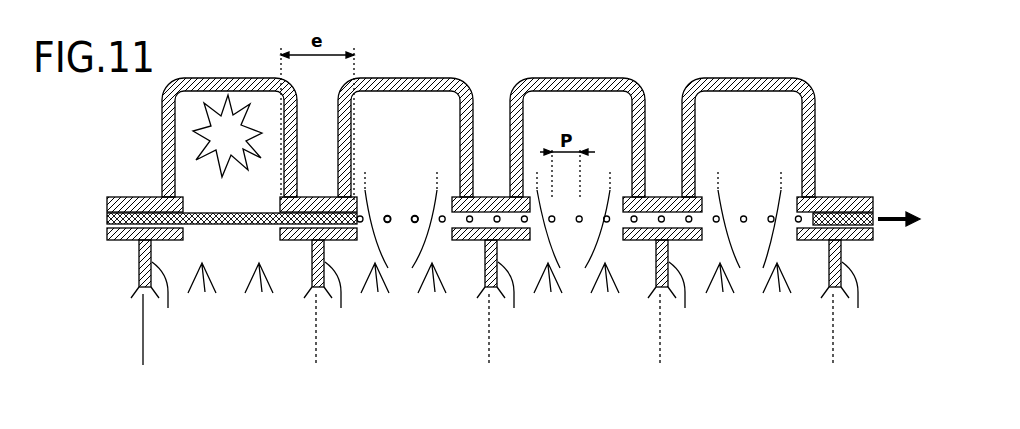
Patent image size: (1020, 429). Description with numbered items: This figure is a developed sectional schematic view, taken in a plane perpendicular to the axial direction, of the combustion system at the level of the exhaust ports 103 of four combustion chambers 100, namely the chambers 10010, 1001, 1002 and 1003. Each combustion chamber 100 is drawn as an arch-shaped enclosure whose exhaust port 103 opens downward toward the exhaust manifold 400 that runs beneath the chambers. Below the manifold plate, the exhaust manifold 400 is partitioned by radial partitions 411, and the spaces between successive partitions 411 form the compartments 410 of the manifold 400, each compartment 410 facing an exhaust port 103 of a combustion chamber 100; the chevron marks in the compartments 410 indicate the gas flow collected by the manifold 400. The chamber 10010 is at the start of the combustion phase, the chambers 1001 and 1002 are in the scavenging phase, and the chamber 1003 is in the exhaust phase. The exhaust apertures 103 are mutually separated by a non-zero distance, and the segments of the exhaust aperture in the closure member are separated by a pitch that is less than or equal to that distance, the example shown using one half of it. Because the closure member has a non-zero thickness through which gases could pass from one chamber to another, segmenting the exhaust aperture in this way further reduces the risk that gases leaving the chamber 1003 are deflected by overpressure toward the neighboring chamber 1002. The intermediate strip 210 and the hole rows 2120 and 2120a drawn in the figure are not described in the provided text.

The combustion chamber 100 is at (107, 206).
The combustion chamber 10010 is at (218, 78).
The combustion chamber 1001 is at (406, 78).
The combustion chamber 1002 is at (575, 78).
The combustion chamber 1003 is at (740, 78).
The exhaust port 103 is at (217, 205).
The substrate plate 210 is at (106, 219).
The through hole 2120 is at (819, 216).
The through hole pair 2120a is at (414, 215).
The exhaust manifold 400 is at (126, 263).
The partitioned compartment 410 is at (231, 296).
The radial partition 411 is at (517, 299).